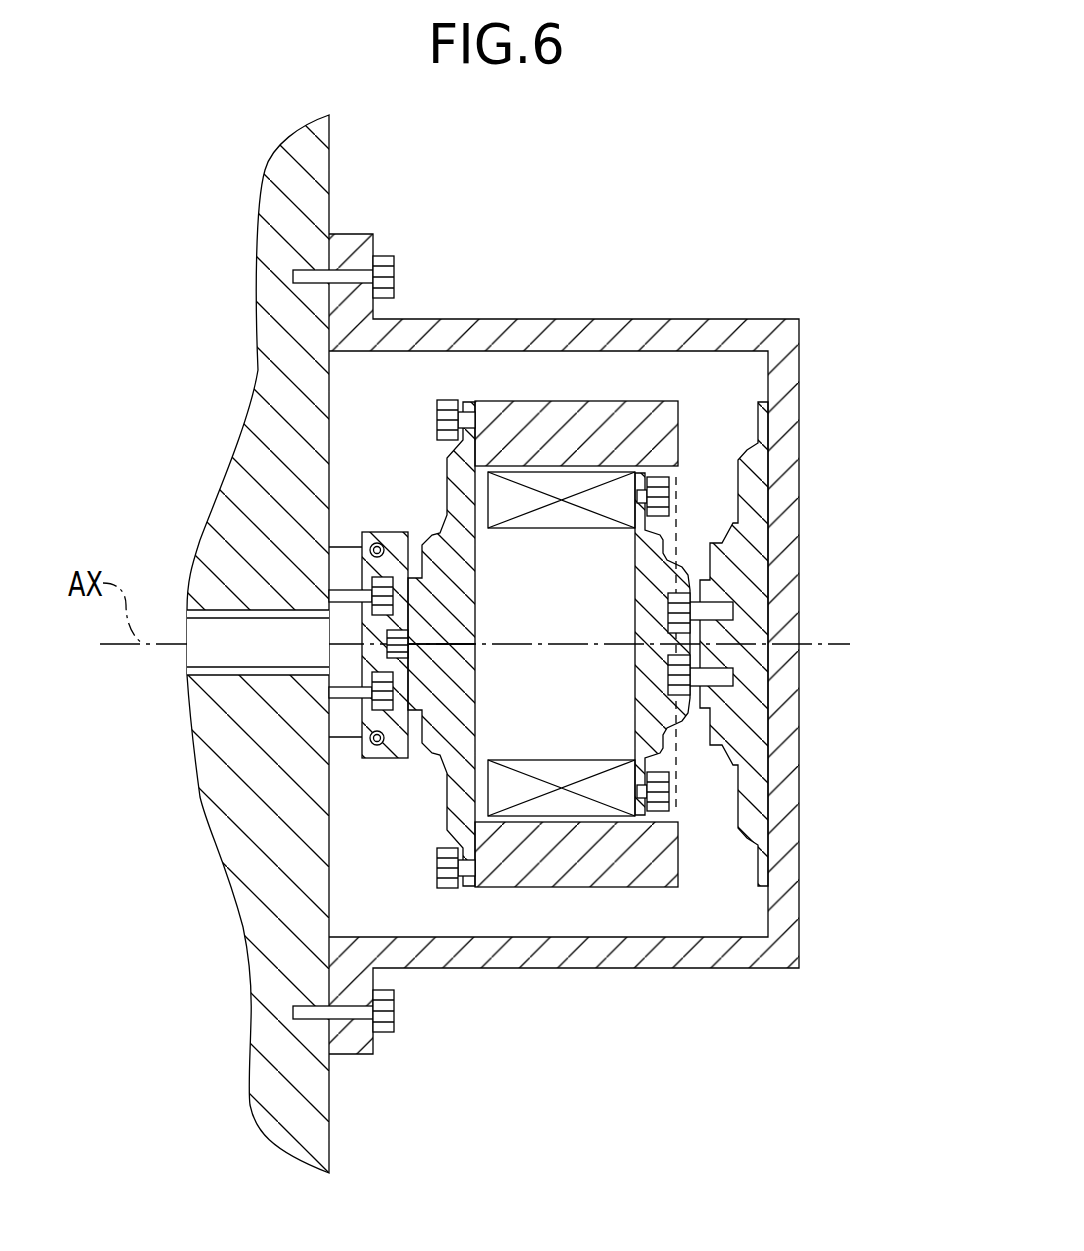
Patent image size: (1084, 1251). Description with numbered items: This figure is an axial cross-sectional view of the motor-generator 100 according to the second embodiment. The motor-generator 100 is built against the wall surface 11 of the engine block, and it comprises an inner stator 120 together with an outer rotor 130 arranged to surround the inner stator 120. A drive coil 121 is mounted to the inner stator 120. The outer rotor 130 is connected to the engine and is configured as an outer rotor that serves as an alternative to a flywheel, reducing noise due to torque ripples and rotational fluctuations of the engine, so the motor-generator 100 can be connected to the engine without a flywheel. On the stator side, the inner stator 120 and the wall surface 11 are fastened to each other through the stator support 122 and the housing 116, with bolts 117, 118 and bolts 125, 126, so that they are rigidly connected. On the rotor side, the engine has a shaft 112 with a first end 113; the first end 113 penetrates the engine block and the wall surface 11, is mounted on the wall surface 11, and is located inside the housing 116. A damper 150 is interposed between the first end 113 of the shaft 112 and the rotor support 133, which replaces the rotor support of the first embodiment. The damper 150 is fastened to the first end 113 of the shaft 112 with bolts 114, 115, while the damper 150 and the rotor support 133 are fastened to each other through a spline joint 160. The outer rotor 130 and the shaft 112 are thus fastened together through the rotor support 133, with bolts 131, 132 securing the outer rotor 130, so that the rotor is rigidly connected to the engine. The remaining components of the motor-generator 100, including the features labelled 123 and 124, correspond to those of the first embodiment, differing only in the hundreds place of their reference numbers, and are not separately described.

The wall surface 11 is at (270, 243).
The motor-generator 100 is at (830, 164).
The shaft 112 is at (218, 627).
The first end 113 is at (331, 753).
The bolt 114 is at (345, 575).
The bolt 115 is at (340, 698).
The housing 116 is at (760, 318).
The bolt 117 is at (385, 255).
The bolt 118 is at (387, 1036).
The stator 120 is at (700, 735).
The drive coil 121 is at (595, 860).
The stator support 122 is at (752, 563).
The hole 123 is at (677, 497).
The bolt 124 is at (678, 735).
The bolt 125 is at (733, 612).
The bolt 126 is at (733, 674).
The rotor 130 is at (580, 420).
The bolt 131 is at (450, 398).
The bolt 132 is at (457, 890).
The rotor support 133 is at (457, 793).
The damper 150 is at (398, 532).
The spline joint 160 is at (388, 652).